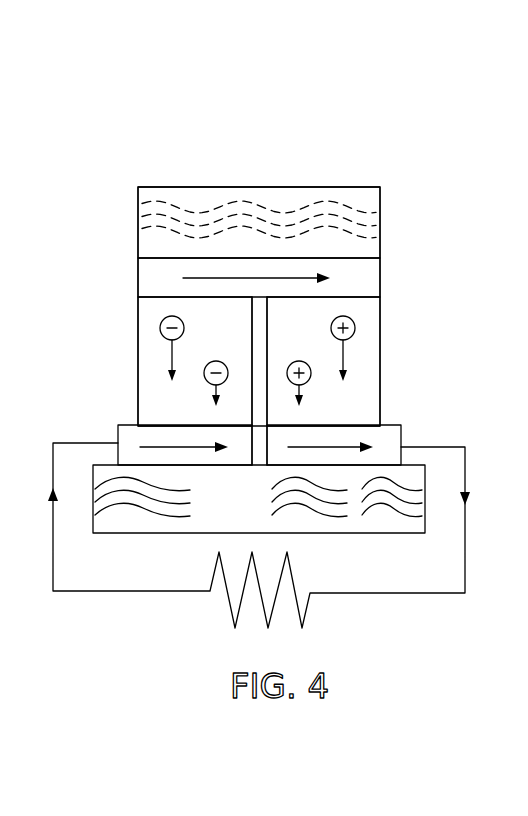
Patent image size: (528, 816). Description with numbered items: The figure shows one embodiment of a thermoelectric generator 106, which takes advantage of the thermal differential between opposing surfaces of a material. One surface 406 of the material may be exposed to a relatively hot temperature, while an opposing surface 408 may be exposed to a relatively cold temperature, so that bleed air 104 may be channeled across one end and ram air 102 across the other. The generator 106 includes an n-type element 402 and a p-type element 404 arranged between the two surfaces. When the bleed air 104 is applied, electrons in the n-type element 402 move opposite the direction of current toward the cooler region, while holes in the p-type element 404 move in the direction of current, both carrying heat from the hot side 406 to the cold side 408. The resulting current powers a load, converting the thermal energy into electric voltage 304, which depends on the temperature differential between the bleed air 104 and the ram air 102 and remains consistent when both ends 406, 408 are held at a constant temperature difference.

The ram air 102 is at (403, 505).
The bleed air 104 is at (243, 204).
The thermoelectric generator 106 is at (452, 146).
The electric voltage 304 is at (307, 610).
The n-type element 402 is at (148, 345).
The p-type element 404 is at (368, 345).
The surface 406 is at (368, 278).
The opposing surface 408 is at (120, 428).